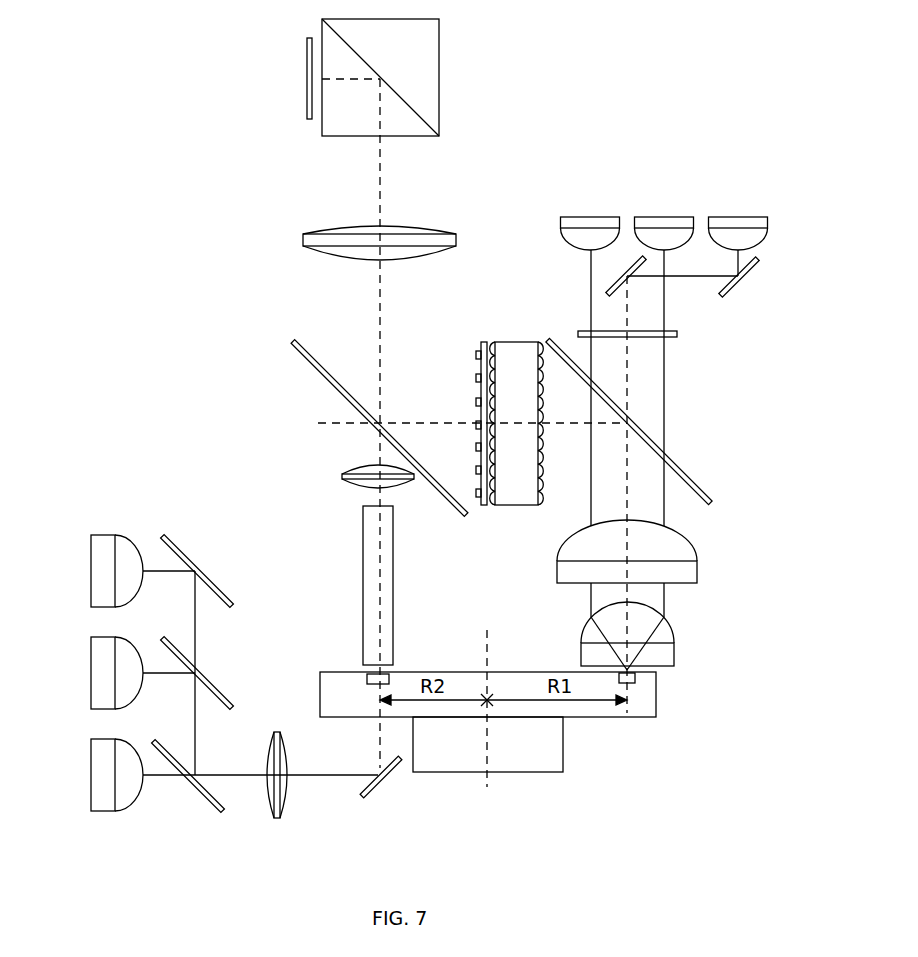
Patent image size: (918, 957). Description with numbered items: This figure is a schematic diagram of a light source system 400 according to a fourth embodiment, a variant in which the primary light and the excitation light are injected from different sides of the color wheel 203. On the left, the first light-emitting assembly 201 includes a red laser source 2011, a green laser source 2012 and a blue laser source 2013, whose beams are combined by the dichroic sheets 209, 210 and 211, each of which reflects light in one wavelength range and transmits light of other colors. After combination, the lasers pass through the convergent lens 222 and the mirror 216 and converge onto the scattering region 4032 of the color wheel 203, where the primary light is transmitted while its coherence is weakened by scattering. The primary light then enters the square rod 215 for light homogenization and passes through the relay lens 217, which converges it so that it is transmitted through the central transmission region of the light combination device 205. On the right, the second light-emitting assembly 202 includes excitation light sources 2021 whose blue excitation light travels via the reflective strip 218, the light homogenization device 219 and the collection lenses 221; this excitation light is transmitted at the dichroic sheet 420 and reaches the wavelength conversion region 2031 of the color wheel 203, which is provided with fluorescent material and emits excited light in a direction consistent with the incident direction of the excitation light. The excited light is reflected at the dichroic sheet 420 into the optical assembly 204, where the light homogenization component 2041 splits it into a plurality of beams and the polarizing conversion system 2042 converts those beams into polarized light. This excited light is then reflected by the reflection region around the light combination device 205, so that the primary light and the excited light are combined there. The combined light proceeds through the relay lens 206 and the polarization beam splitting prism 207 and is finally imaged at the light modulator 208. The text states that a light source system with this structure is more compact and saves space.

The light source system 400 is at (130, 118).
The first light-emitting assembly 201 is at (53, 539).
The red laser source 2011 is at (91, 585).
The green laser source 2012 is at (91, 687).
The blue laser source 2013 is at (91, 794).
The second light-emitting assembly 202 is at (579, 156).
The excitation light source 2021 is at (612, 215).
The color wheel 203 is at (552, 757).
The wavelength conversion region 2031 is at (633, 684).
The optical assembly 204 is at (477, 561).
The light homogenization component 2041 is at (527, 341).
The polarizing conversion system 2042 is at (486, 506).
The light combination device 205 is at (313, 363).
The relay lens 206 is at (330, 232).
The polarization beam splitting prism 207 is at (439, 72).
The light modulator 208 is at (307, 83).
The dichroic sheet 209 is at (203, 568).
The dichroic sheet 210 is at (203, 672).
The dichroic sheet 211 is at (190, 785).
The square rod 215 is at (363, 545).
The mirror 216 is at (395, 771).
The relay lens 217 is at (340, 478).
The reflective strip 218 is at (608, 280).
The light homogenization device 219 is at (677, 335).
The collection lens 221 is at (698, 572).
The convergent lens 222 is at (285, 792).
The dichroic sheet 420 is at (682, 466).
The scattering region 4032 is at (372, 684).